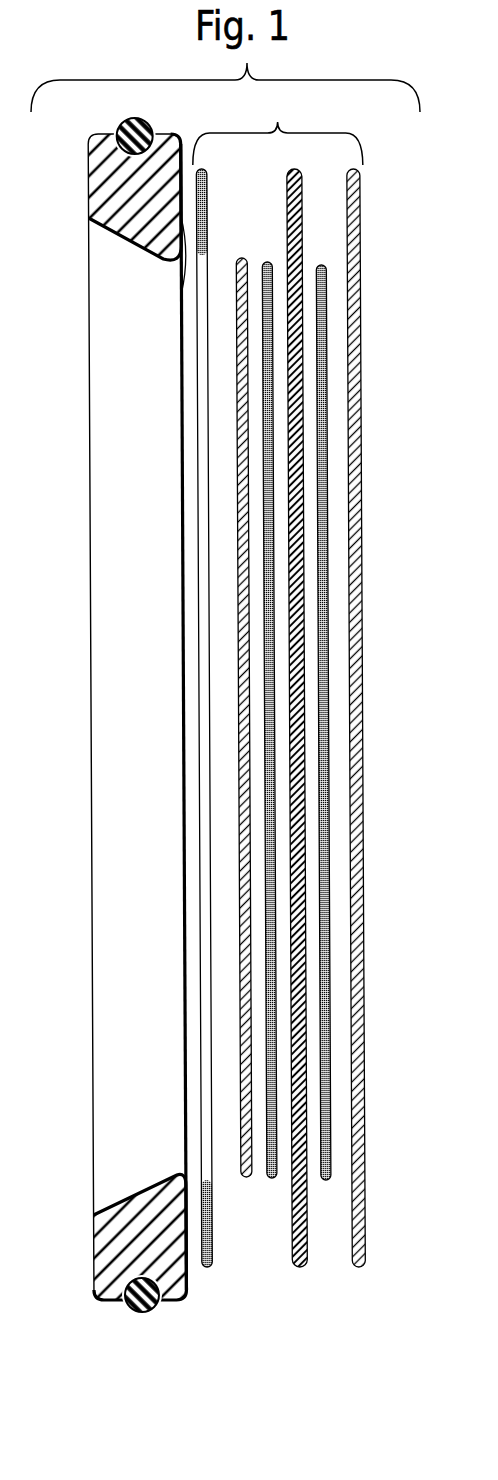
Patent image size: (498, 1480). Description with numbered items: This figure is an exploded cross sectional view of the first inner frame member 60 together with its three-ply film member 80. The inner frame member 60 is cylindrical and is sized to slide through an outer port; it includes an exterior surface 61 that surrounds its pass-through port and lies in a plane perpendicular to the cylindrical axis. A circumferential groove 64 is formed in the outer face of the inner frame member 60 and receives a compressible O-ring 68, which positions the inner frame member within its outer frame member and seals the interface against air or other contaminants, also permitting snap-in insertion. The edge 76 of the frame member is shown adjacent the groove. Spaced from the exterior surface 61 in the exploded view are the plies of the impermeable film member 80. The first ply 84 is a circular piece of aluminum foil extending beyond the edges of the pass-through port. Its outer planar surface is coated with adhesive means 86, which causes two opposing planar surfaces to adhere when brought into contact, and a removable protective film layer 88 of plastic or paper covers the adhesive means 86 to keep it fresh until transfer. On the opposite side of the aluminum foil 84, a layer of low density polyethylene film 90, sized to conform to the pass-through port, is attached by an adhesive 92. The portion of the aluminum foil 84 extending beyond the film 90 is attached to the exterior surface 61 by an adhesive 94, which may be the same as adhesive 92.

The first inner frame member 60 is at (88, 183).
The exterior surface 61 is at (181, 292).
The circumferential groove 64 is at (120, 163).
The O-ring 68 is at (135, 119).
The shoulder 76 is at (121, 229).
The impermeable film member 80 is at (277, 130).
The first ply of aluminum foil 84 is at (301, 208).
The adhesive means 86 is at (326, 290).
The removable protective film layer 88 is at (360, 349).
The low density polyethylene film 90 is at (238, 432).
The adhesive 92 is at (263, 368).
The adhesive 94 is at (207, 208).